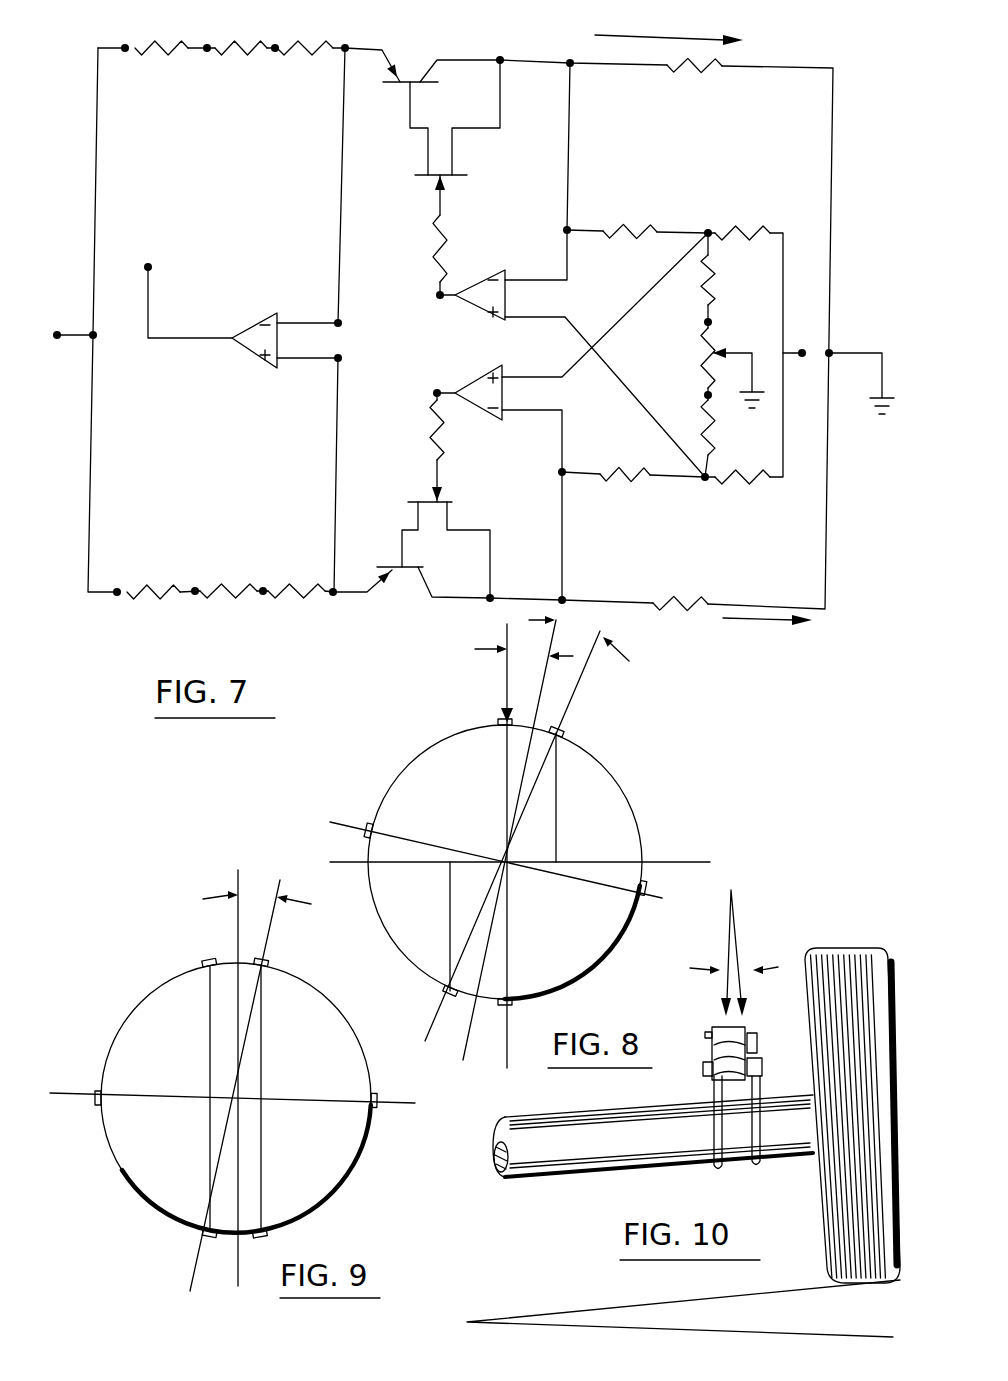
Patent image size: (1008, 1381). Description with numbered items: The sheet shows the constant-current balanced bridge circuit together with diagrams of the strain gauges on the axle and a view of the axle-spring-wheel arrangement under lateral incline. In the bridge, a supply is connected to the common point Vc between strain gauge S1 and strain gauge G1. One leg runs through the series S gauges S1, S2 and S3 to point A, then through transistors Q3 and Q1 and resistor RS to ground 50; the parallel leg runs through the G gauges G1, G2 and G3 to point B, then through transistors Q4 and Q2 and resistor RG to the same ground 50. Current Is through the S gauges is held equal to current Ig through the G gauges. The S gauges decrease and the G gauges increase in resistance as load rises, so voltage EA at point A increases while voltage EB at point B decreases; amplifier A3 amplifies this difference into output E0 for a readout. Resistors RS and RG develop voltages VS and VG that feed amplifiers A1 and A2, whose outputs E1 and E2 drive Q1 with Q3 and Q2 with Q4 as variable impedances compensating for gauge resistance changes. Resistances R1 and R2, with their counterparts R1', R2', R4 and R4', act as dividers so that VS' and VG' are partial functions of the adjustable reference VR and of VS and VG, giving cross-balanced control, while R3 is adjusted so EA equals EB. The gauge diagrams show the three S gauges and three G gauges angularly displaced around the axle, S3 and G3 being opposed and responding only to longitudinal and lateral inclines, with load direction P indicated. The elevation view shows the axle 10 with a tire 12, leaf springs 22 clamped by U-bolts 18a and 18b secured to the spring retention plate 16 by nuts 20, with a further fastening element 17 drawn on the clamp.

In FIG. 7, the strain gauge G1 is at (172, 53).
In FIG. 8, the strain gauge G1 is at (509, 1003).
In FIG. 9, the strain gauge G1 is at (268, 1240).
In FIG. 7, the strain gauge G2 is at (251, 57).
In FIG. 8, the strain gauge G2 is at (445, 989).
In FIG. 9, the strain gauge G2 is at (200, 1240).
In FIG. 7, the strain gauge G3 is at (310, 58).
In FIG. 8, the strain gauge G3 is at (645, 886).
In FIG. 9, the strain gauge G3 is at (378, 1105).
In FIG. 7, the strain gauge S1 is at (160, 598).
In FIG. 8, the strain gauge S1 is at (565, 740).
In FIG. 9, the strain gauge S1 is at (271, 965).
In FIG. 7, the strain gauge S2 is at (238, 598).
In FIG. 8, the strain gauge S2 is at (495, 722).
In FIG. 9, the strain gauge S2 is at (205, 962).
In FIG. 7, the strain gauge S3 is at (308, 598).
In FIG. 8, the strain gauge S3 is at (370, 824).
In FIG. 9, the strain gauge S3 is at (100, 1096).
In FIG. 7, the point B is at (345, 46).
In FIG. 7, the point A is at (335, 596).
In FIG. 7, the common point Vc VC is at (54, 334).
In FIG. 7, the output voltage Eo E0 is at (150, 265).
In FIG. 7, the amplifier A-1 A1 is at (478, 413).
In FIG. 7, the amplifier A-2 A2 is at (481, 275).
In FIG. 7, the amplifier A-3 A3 is at (242, 320).
In FIG. 7, the voltage Eb EB is at (341, 326).
In FIG. 7, the voltage Ea EA is at (341, 357).
In FIG. 7, the output voltage E1 is at (434, 390).
In FIG. 7, the output voltage E2 is at (438, 296).
In FIG. 7, the transistor Q-1 Q1 is at (455, 504).
In FIG. 7, the transistor Q-2 Q2 is at (462, 182).
In FIG. 7, the transistor Q-3 Q3 is at (393, 563).
In FIG. 7, the transistor Q-4 Q4 is at (405, 85).
In FIG. 7, the voltage Vg VG is at (560, 49).
In FIG. 7, the voltage Vg' VG' is at (710, 214).
In FIG. 7, the voltage Vs VS is at (544, 589).
In FIG. 7, the voltage Vs' VS' is at (681, 436).
In FIG. 7, the reference voltage Vr VR is at (802, 350).
In FIG. 7, the current Ig is at (665, 37).
In FIG. 7, the current Is is at (742, 622).
In FIG. 7, the resistor RG is at (698, 75).
In FIG. 7, the resistor RS is at (673, 600).
In FIG. 7, the resistance R-1 R1 is at (758, 217).
In FIG. 7, the resistance R-2 R2 is at (630, 214).
In FIG. 7, the resistor R3 is at (702, 345).
In FIG. 7, the resistor R4 is at (726, 280).
In FIG. 7, the resistor R1' is at (745, 457).
In FIG. 7, the resistor R2' is at (625, 492).
In FIG. 7, the resistor R4' is at (727, 461).
In FIG. 7, the ground 50 is at (833, 352).
In FIG. 8, the load direction P is at (507, 676).
In FIG. 10, the tire 12 is at (869, 962).
In FIG. 10, the axle 10 is at (606, 1182).
In FIG. 10, the leaf springs 22 is at (747, 1032).
In FIG. 10, the nuts 20 is at (755, 1050).
In FIG. 10, the nut 17 is at (762, 1066).
In FIG. 10, the spring retention plate 16 is at (764, 1073).
In FIG. 10, the U-bolt 18a is at (763, 1163).
In FIG. 10, the U-bolt 18b is at (723, 1167).